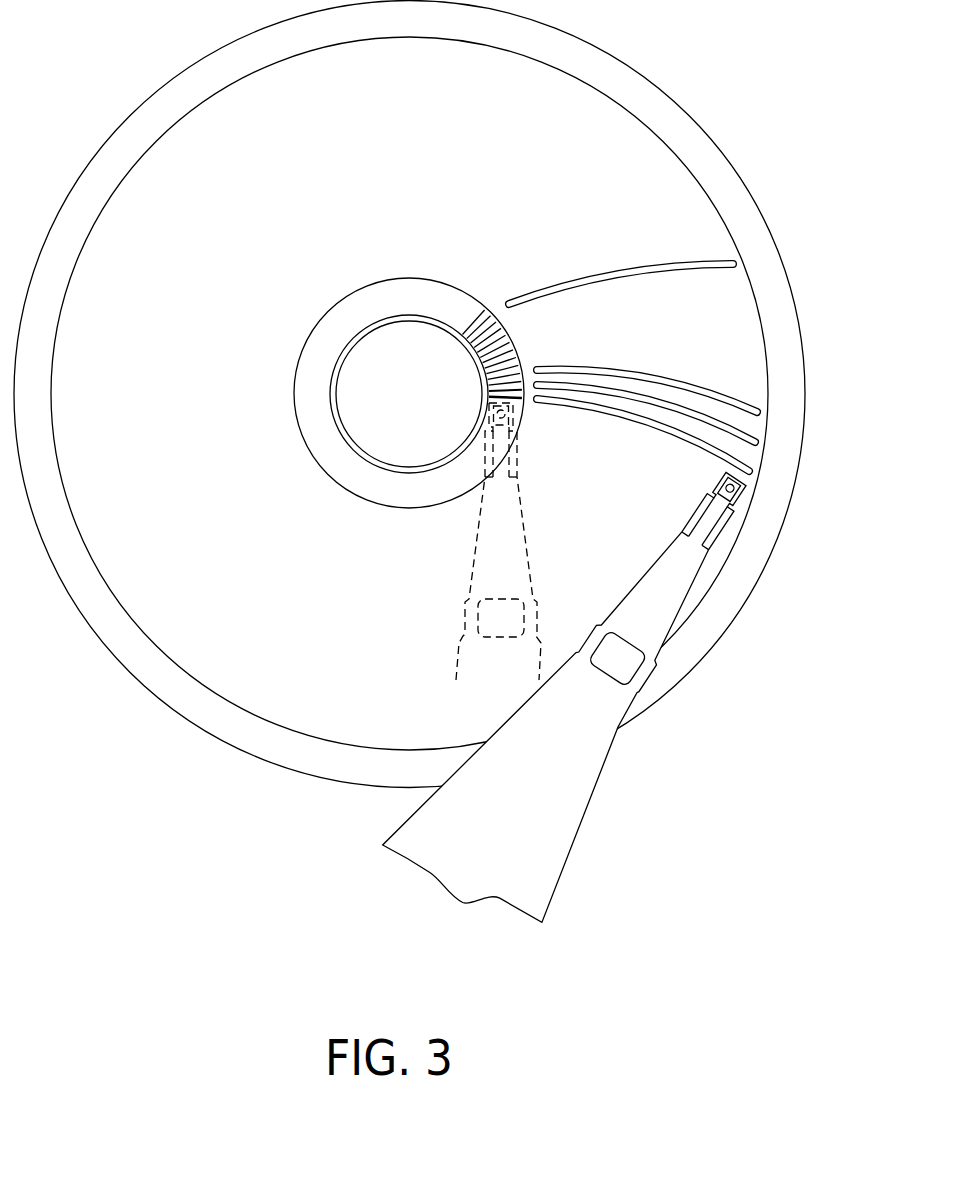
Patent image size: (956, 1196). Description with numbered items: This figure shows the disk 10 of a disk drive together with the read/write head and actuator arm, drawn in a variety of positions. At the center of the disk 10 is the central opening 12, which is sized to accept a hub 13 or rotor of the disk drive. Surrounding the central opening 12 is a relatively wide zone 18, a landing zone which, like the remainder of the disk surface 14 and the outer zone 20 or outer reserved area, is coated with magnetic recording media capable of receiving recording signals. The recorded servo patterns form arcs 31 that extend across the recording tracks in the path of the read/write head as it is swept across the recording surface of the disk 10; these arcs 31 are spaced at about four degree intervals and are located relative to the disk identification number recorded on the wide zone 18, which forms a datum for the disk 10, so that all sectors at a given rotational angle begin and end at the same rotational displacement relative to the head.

The disk 10 is at (431, 394).
The central opening 12 is at (452, 338).
The hub 13 is at (474, 325).
The disk surface 14 is at (612, 165).
The wide zone 18 is at (412, 296).
The outer zone 20 is at (641, 88).
The arcs 31 is at (712, 383).